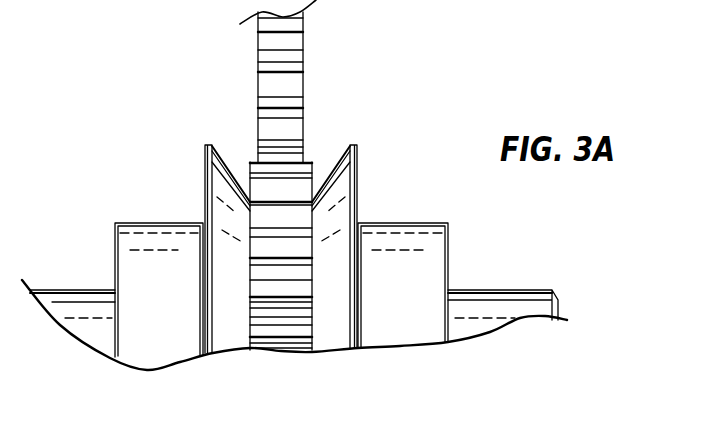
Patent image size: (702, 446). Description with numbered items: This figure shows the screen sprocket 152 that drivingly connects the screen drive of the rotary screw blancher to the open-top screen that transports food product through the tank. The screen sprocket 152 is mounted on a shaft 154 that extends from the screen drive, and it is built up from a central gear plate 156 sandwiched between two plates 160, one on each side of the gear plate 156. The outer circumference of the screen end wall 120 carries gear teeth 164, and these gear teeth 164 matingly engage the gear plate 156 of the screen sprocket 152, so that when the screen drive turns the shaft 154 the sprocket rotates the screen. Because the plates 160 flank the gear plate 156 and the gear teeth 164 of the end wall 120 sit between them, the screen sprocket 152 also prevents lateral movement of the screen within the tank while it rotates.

The inlet end wall 120 is at (251, 40).
The gear teeth 164 is at (297, 112).
The gear plate 156 is at (270, 332).
The screen sprocket 152 is at (213, 360).
The plates 160 is at (145, 360).
The shaft 154 is at (78, 307).